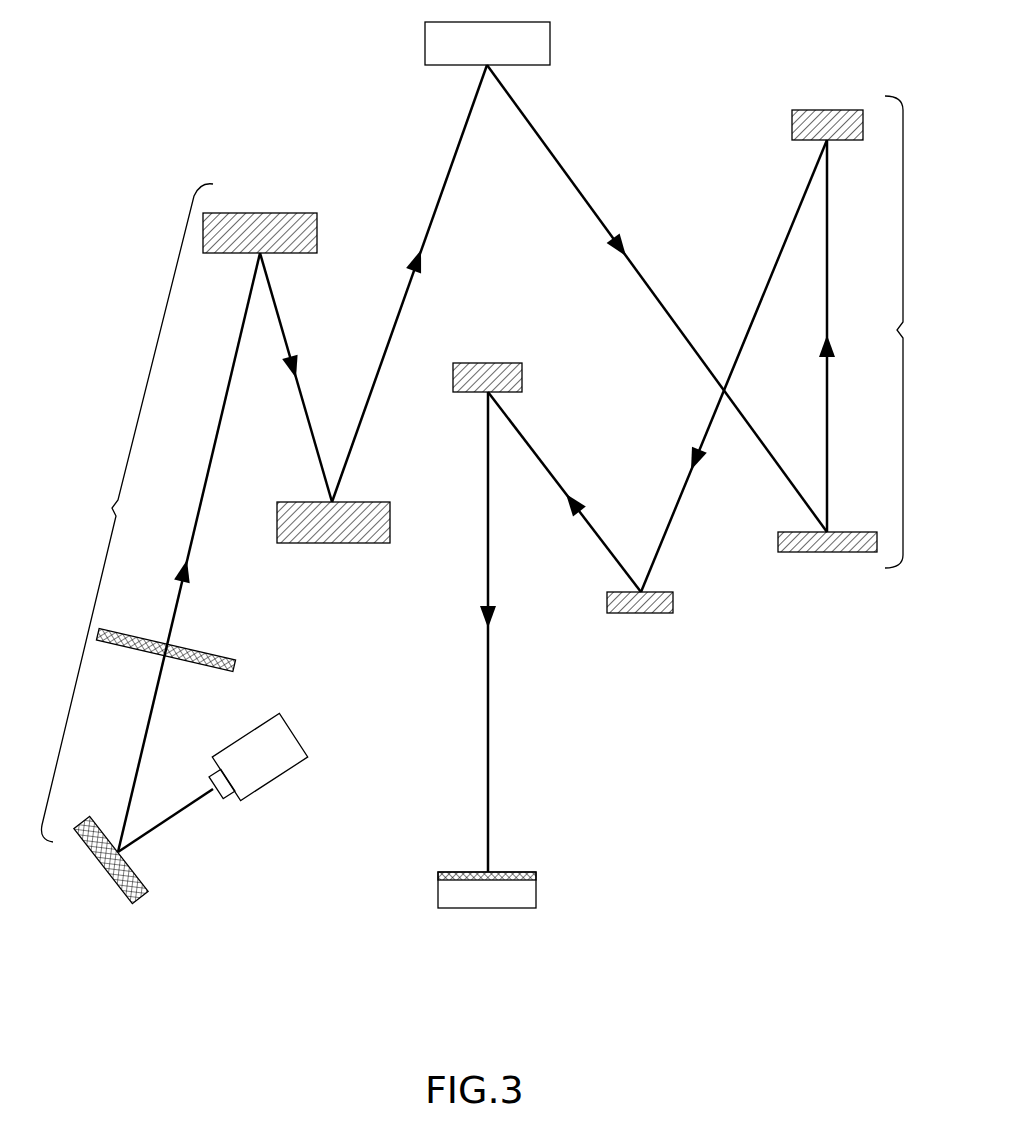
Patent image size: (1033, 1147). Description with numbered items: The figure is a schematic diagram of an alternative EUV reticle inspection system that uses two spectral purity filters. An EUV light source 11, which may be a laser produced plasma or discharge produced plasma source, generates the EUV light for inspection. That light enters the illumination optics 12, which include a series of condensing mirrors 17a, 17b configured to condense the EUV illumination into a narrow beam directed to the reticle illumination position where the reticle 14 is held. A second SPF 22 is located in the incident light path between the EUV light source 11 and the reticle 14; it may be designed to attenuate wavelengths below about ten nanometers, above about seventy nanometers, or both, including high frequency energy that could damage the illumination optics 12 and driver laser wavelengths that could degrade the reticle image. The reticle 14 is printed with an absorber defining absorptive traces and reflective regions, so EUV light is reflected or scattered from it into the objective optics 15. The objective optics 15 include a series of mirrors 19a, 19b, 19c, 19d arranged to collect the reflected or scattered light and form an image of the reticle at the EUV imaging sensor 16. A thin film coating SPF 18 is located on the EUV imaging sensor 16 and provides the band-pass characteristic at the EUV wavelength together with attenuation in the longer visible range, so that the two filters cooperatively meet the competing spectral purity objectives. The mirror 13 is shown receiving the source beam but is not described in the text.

The EUV light source 11 is at (283, 775).
The illumination optics 12 is at (127, 513).
The mirror 13 is at (143, 895).
The reticle 14 is at (550, 45).
The objective optics 15 is at (910, 332).
The EUV imaging sensor 16 is at (536, 892).
The condensing mirror 17a is at (317, 236).
The condensing mirror 17b is at (390, 520).
The thin film coating SPF 18 is at (536, 876).
The mirror 19a is at (785, 532).
The mirror 19b is at (792, 123).
The mirror 19c is at (673, 602).
The mirror 19d is at (522, 378).
The second SPF 22 is at (226, 658).